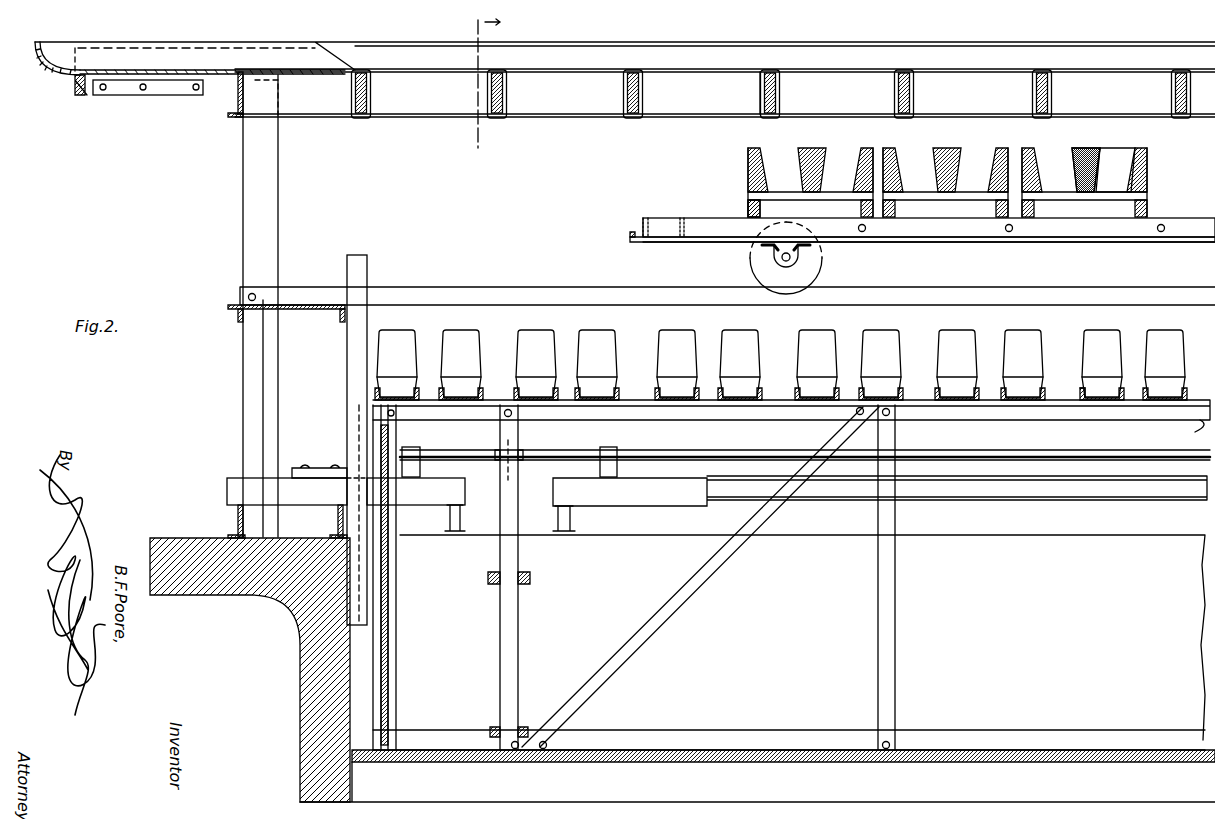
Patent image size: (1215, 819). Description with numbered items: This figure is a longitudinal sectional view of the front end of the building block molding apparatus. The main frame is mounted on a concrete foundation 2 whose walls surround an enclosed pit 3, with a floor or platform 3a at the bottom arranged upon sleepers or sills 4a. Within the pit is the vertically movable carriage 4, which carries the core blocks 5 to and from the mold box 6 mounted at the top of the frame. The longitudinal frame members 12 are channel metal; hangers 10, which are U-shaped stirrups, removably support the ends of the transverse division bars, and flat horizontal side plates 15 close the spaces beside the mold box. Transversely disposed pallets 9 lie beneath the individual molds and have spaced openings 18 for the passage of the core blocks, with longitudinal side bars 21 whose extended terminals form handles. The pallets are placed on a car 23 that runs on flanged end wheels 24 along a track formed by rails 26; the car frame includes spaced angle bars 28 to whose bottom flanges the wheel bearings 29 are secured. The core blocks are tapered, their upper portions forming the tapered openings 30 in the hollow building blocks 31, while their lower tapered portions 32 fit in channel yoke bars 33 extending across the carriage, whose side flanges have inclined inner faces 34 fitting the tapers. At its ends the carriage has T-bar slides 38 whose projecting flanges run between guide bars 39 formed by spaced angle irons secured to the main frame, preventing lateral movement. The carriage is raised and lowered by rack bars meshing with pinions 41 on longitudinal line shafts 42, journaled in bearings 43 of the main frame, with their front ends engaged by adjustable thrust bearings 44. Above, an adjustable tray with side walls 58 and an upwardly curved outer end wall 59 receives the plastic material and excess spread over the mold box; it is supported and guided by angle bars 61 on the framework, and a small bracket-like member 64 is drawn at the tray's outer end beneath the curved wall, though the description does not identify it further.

The foundation 2 is at (297, 652).
The pit 3 is at (789, 578).
The floor or platform 3a is at (745, 750).
The vertically movable carriage 4 is at (896, 692).
The sleepers or sills 4a is at (798, 772).
The core blocks 5 is at (1185, 345).
The mold box 6 is at (1098, 78).
The pallets 9 is at (1158, 204).
The hangers 10 is at (500, 119).
The longitudinal frame members 12 is at (690, 36).
The horizontal side plates 15 is at (786, 70).
The openings 18 is at (753, 190).
The longitudinal bars 21 is at (747, 208).
The car 23 is at (1198, 234).
The end wheels 24 is at (808, 264).
The rails 26 is at (522, 298).
The angle bars 28 is at (642, 221).
The bearings 29 is at (772, 256).
The tapered openings 30 is at (1116, 152).
The hollow building blocks 31 is at (1086, 152).
The lower tapered portions 32 is at (1160, 385).
The channel yoke bars 33 is at (1072, 408).
The inclined inner faces 34 is at (1086, 390).
The slides 38 is at (368, 683).
The guide bars 39 is at (356, 373).
The pinions 41 is at (510, 480).
The line shafts 42 is at (733, 452).
The bearings 43 is at (610, 452).
The thrust bearings 44 is at (310, 470).
The side walls 58 is at (108, 46).
The outer end walls 59 is at (47, 70).
The angle bars 61 is at (178, 91).
The angle bracket 64 is at (90, 95).